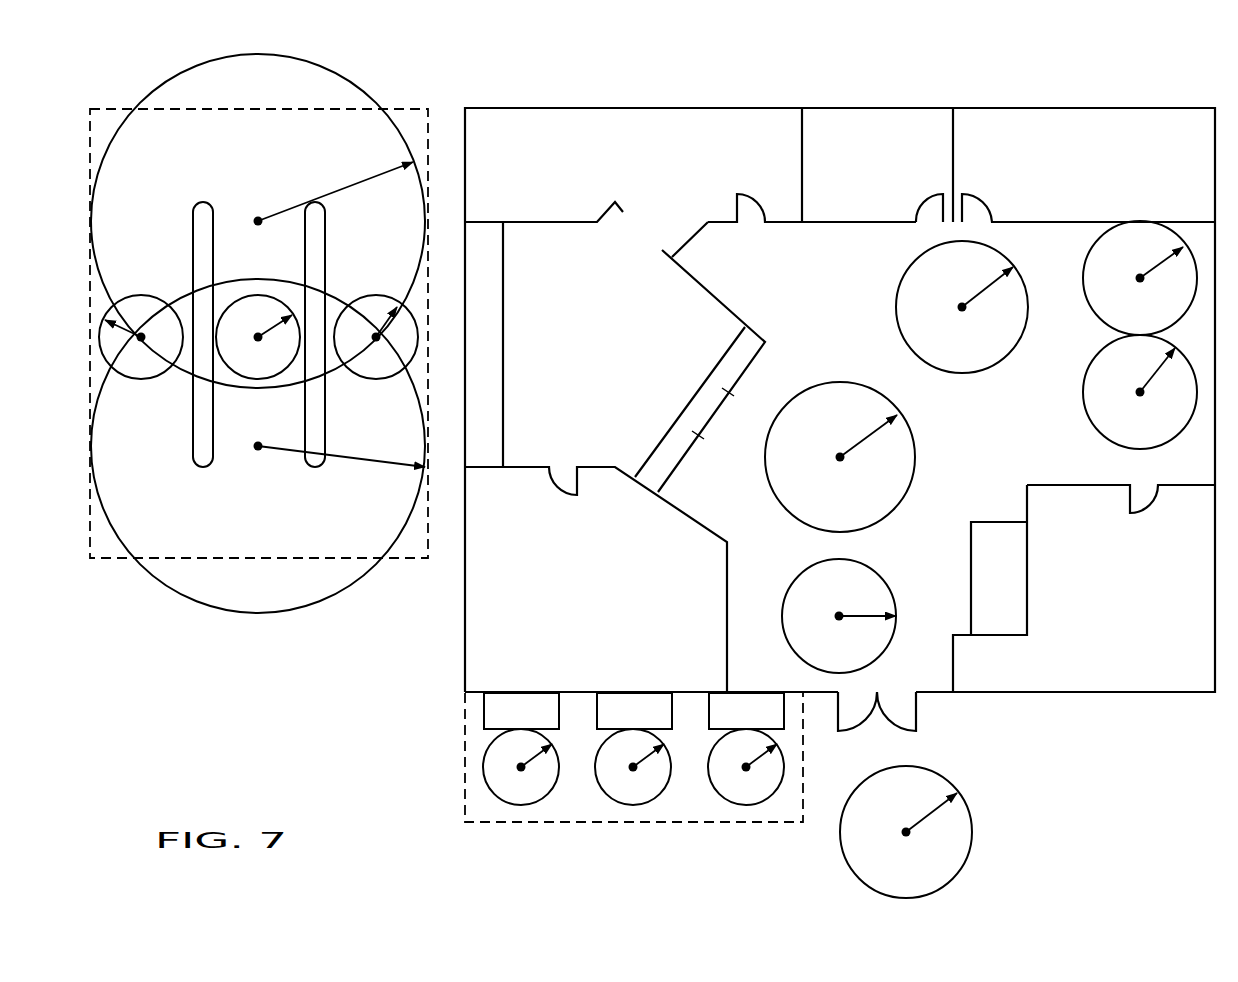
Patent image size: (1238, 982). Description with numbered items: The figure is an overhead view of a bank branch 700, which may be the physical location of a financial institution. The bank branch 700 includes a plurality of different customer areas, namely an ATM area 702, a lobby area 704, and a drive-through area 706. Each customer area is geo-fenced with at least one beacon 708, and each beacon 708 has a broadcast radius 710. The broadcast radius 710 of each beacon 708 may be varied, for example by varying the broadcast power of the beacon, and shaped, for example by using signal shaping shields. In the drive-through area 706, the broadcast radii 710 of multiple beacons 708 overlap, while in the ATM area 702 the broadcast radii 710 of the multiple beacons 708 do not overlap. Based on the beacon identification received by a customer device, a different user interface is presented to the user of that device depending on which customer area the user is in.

The bank branch 700 is at (864, 50).
The ATM area 702 is at (466, 697).
The lobby area 704 is at (860, 657).
The drive-through area 706 is at (120, 108).
The beacon 708 is at (258, 452).
The broadcast radius 710 is at (298, 180).